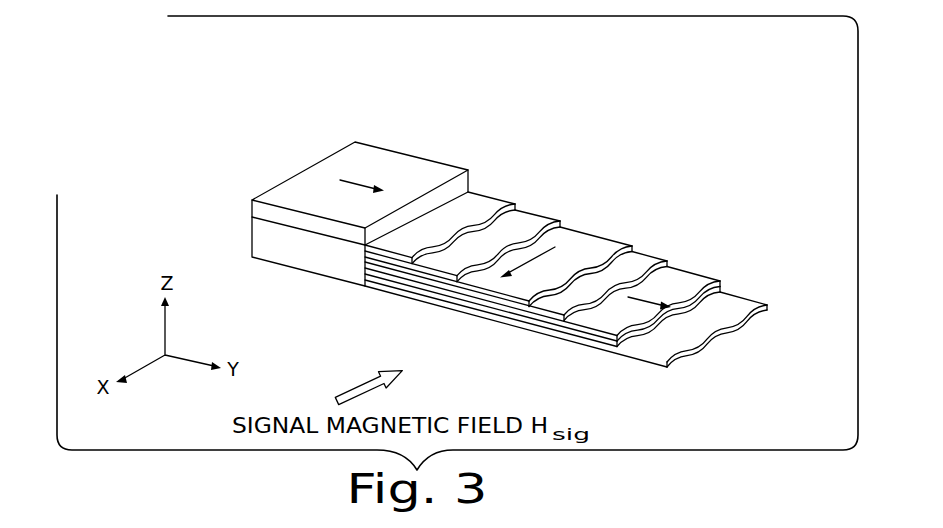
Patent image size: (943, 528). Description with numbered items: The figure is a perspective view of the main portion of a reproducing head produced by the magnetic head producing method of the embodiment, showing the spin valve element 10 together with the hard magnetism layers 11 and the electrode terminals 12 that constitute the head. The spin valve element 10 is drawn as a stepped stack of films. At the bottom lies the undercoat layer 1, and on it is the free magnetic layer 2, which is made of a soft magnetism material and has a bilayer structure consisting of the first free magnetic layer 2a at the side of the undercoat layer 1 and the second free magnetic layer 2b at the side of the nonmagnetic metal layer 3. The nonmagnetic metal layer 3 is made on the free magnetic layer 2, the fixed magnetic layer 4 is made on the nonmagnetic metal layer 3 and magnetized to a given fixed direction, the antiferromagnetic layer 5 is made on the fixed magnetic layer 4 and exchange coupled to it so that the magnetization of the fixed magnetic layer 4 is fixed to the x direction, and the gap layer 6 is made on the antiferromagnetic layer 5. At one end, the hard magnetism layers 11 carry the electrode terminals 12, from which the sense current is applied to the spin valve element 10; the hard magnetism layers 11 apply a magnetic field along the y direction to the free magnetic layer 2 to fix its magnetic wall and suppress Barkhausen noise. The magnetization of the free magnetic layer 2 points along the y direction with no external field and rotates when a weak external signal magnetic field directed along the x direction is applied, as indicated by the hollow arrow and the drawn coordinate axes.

The electrode terminals 12 is at (297, 185).
The hard magnetism layers 11 is at (297, 258).
The spin valve element 10 is at (827, 192).
The gap layer 6 is at (487, 207).
The antiferromagnetic layer 5 is at (532, 222).
The fixed magnetic layer 4 is at (587, 245).
The nonmagnetic metal layer 3 is at (642, 265).
The free magnetic layer 2 is at (769, 193).
The second free magnetic layer 2b is at (687, 280).
The first free magnetic layer 2a is at (723, 283).
The undercoat layer 1 is at (737, 307).